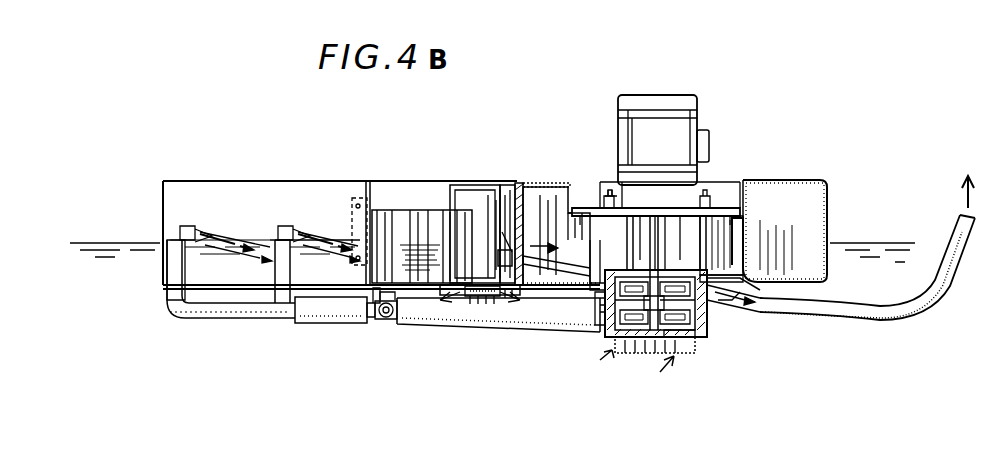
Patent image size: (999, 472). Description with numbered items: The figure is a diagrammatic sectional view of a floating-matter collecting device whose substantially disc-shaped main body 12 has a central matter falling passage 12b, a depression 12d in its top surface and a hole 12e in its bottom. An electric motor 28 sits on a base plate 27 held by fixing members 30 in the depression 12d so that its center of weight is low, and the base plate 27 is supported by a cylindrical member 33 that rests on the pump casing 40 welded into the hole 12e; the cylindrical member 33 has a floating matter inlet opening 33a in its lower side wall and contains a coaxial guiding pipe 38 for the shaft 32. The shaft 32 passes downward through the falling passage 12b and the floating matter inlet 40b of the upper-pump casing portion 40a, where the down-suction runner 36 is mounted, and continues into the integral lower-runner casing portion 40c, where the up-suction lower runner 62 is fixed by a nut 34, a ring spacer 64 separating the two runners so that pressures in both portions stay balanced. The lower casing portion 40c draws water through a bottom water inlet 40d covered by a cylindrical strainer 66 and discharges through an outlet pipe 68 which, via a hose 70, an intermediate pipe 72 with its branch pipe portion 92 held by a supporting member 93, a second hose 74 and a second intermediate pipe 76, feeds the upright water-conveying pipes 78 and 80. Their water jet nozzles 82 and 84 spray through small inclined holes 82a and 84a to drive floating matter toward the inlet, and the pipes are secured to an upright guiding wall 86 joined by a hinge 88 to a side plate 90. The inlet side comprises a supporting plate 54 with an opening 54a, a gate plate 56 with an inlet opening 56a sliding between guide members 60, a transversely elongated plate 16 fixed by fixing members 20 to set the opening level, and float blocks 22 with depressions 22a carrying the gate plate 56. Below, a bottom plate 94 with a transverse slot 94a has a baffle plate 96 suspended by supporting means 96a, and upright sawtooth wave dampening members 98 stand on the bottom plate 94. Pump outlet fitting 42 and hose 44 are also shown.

The main body 12 is at (828, 192).
The matter falling passage 12b is at (748, 276).
The depression 12d is at (744, 208).
The hole 12e is at (586, 322).
The transversely elongated plate 16 is at (504, 230).
The fixing members 20 is at (458, 230).
The float blocks 22 is at (478, 228).
The complementary depressions 22a is at (462, 212).
The base plate 27 is at (730, 214).
The electric motor 28 is at (674, 102).
The fixing members 30 is at (604, 198).
The shaft 32 is at (710, 236).
The cylindrical member 33 is at (589, 248).
The floating matter inlet opening 33a is at (596, 248).
The nut 34 is at (656, 334).
The runner or impeller 36 is at (730, 268).
The guiding pipe 38 is at (539, 184).
The pump casing 40 is at (698, 336).
The upper-pump casing portion 40a is at (606, 354).
The floating matter inlet 40b is at (630, 242).
The lower-runner casing portion 40c is at (628, 362).
The water inlet 40d is at (682, 358).
The outlet pipe 42 is at (766, 310).
The hose 44 is at (918, 300).
The supporting plate 54 is at (540, 272).
The opening 54a is at (578, 216).
The gate plate 56 is at (518, 186).
The inlet opening 56a is at (546, 216).
The guide members 60 is at (507, 208).
The lower runner 62 is at (696, 314).
The ring spacer 64 is at (642, 326).
The strainer 66 is at (690, 340).
The outlet pipe 68 is at (596, 330).
The hose 70 is at (418, 326).
The intermediate pipe 72 is at (388, 300).
The second hose 74 is at (320, 322).
The second intermediate pipe 76 is at (218, 318).
The first water-conveying pipe 78 is at (278, 302).
The second water-conveying pipe 80 is at (168, 280).
The water jet nozzle 82 is at (292, 226).
The small backward downward inclined holes 82a is at (320, 236).
The water jet nozzle 84 is at (186, 226).
The small backward downward inclined holes 84a is at (211, 236).
The upright guiding wall 86 is at (250, 192).
The hinge 88 is at (362, 210).
The upright side plate 90 is at (392, 206).
The branch pipe portion 92 is at (386, 322).
The supporting member 93 is at (365, 310).
The bottom plate 94 is at (462, 298).
The elongated transverse slot 94a is at (510, 302).
The baffle plate 96 is at (480, 298).
The supporting means 96a is at (472, 304).
The wave dampening members 98 is at (407, 232).